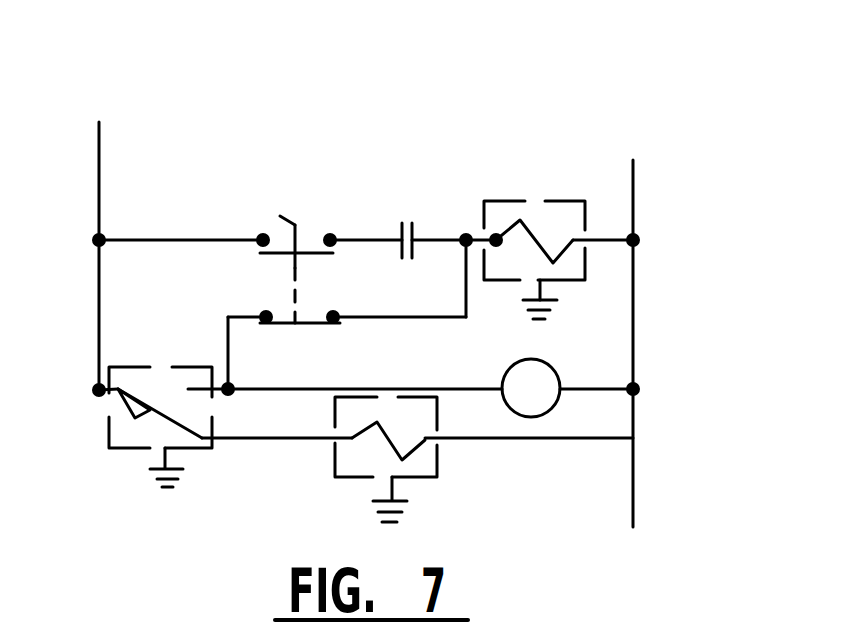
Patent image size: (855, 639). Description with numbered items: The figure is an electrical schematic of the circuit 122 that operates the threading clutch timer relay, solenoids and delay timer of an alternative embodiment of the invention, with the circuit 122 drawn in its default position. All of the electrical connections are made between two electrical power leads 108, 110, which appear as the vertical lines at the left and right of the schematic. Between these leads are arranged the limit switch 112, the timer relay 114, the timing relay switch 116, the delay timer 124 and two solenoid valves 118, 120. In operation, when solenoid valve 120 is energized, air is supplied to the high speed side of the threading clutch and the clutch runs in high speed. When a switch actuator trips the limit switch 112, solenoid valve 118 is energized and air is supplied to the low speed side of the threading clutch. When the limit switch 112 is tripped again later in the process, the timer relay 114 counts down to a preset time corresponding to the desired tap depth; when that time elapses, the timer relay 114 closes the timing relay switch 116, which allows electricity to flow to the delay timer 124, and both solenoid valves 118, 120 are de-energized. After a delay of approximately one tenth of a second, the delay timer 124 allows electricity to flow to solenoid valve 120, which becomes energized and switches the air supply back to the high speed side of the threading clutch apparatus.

The electrical power lead 108 is at (99, 152).
The electrical power lead 110 is at (635, 180).
The limit switch 112 is at (107, 432).
The timer relay 114 is at (543, 357).
The timing relay switch 116 is at (405, 197).
The solenoid valve 118 is at (508, 200).
The solenoid valve 120 is at (438, 457).
The circuit 122 is at (553, 68).
The delay timer 124 is at (298, 150).